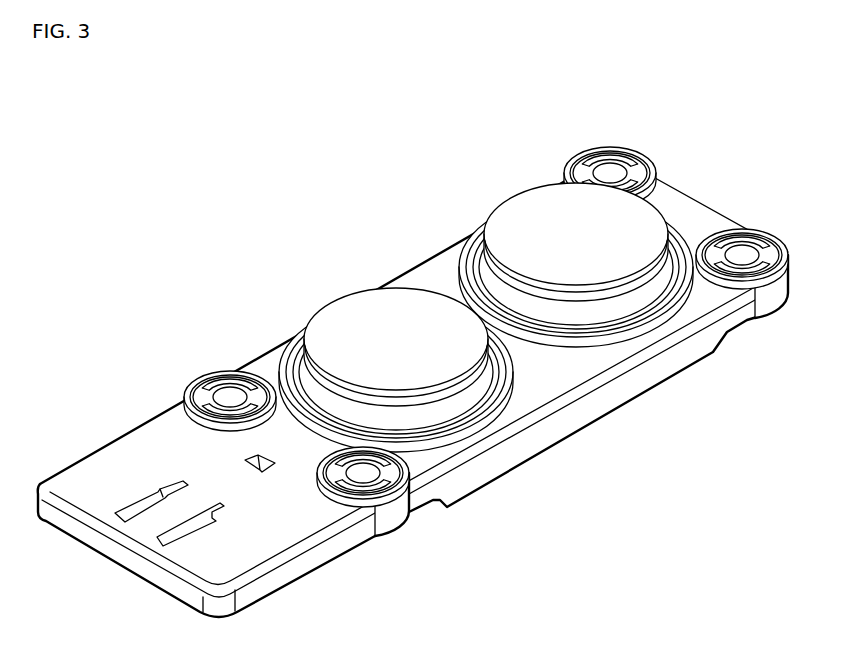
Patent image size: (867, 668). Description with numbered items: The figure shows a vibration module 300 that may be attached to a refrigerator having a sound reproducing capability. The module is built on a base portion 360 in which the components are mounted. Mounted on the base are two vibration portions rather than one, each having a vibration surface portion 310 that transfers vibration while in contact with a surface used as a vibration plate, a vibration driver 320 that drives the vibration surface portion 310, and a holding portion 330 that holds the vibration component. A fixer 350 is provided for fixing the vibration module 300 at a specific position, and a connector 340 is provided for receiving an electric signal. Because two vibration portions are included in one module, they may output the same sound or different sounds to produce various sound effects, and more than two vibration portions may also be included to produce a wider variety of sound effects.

The vibration module 300 is at (107, 96).
The vibration surface portion 310 is at (523, 208).
The vibration driver 320 is at (293, 388).
The holding portion 330 is at (287, 372).
The connector 340 is at (162, 517).
The fixer 350 is at (216, 378).
The base portion 360 is at (118, 559).